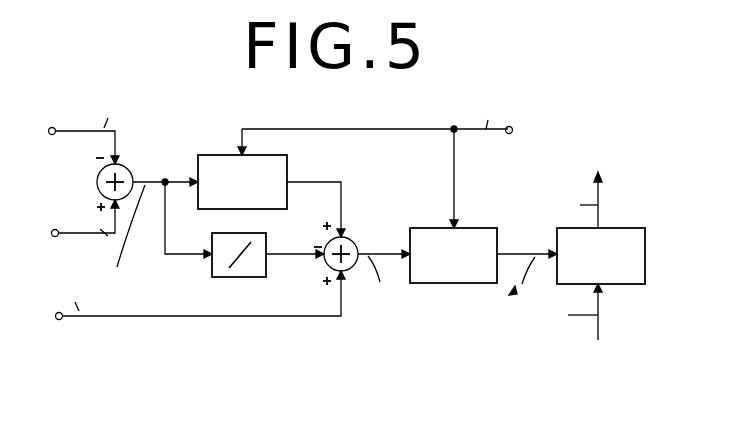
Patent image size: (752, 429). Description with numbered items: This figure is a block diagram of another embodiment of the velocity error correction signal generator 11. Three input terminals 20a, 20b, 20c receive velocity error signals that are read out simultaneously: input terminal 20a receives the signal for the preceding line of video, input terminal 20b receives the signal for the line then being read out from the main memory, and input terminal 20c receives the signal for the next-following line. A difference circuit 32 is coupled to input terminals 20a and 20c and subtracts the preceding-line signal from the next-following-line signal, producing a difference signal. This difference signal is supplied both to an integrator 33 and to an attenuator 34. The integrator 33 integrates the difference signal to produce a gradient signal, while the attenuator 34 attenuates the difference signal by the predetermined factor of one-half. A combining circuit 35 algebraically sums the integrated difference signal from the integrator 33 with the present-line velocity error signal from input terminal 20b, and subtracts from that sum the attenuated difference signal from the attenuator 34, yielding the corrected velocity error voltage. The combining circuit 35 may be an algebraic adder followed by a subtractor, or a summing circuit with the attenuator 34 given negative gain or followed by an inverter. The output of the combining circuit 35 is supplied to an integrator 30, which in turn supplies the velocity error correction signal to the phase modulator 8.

The error correction signal generator 11 is at (285, 105).
The input terminal 20a is at (54, 134).
The input terminal 20b is at (61, 319).
The input terminal 20c is at (57, 236).
The difference circuit 32 is at (126, 170).
The integrator 33 is at (278, 172).
The attenuator 34 is at (236, 276).
The combining circuit 35 is at (352, 243).
The integrator 30 is at (463, 278).
The phase modulator 8 is at (611, 228).